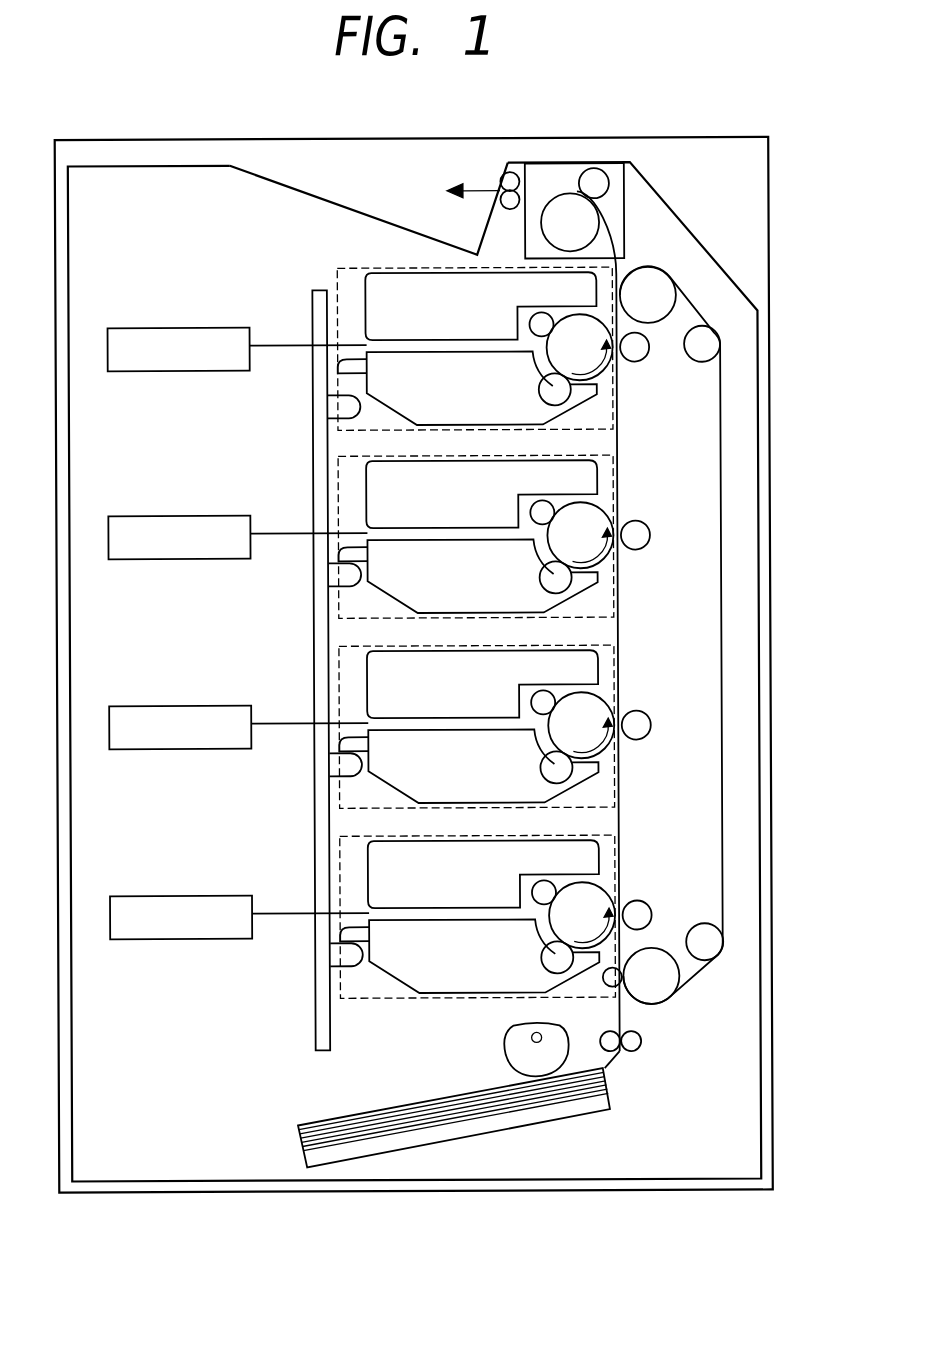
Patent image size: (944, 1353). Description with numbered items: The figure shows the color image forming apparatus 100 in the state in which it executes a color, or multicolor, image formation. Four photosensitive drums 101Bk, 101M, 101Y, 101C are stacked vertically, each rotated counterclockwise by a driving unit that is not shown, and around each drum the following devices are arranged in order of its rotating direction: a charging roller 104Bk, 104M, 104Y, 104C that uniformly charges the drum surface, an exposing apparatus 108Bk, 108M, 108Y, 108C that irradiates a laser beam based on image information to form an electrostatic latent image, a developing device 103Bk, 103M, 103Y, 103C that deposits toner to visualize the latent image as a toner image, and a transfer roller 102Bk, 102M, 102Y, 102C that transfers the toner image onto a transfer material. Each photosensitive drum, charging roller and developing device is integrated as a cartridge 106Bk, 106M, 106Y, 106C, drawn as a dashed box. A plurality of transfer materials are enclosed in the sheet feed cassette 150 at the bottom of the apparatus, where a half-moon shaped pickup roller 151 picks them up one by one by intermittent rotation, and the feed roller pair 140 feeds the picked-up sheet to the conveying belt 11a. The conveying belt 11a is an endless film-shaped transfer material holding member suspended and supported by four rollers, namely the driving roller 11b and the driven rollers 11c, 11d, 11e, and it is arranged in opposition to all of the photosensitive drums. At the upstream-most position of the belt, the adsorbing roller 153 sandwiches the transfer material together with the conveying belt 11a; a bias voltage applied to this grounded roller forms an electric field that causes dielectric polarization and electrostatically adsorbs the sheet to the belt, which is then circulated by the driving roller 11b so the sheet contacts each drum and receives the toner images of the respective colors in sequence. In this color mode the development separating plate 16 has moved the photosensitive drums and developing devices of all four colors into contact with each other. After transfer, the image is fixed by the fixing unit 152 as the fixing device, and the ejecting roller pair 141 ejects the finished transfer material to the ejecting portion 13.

The image forming apparatus 100 is at (151, 139).
The ejecting portion 13 is at (375, 216).
The ejecting roller pair 141 is at (509, 172).
The fixing unit 152 is at (627, 192).
The conveying belt 11a is at (723, 753).
The driving roller 11b is at (661, 276).
The driven roller 11c is at (716, 342).
The driven roller 11d is at (721, 942).
The driven roller 11e is at (668, 989).
The adsorbing roller 153 is at (614, 992).
The feed roller pair 140 is at (631, 1050).
The pickup roller 151 is at (505, 1054).
The sheet feed cassette 150 is at (300, 1143).
The development separating plate 16 is at (314, 1031).
The cartridge 106Bk is at (339, 275).
The cartridge 106M is at (339, 483).
The cartridge 106Y is at (340, 673).
The cartridge 106C is at (339, 862).
The photosensitive drum 101Bk is at (582, 305).
The photosensitive drum 101M is at (582, 493).
The photosensitive drum 101Y is at (582, 683).
The photosensitive drum 101C is at (582, 873).
The charging roller 104Bk is at (531, 323).
The charging roller 104M is at (531, 511).
The charging roller 104Y is at (531, 701).
The charging roller 104C is at (531, 891).
The developing device 103Bk is at (540, 389).
The developing device 103M is at (540, 577).
The developing device 103Y is at (540, 767).
The developing device 103C is at (540, 959).
The transfer roller 102Bk is at (637, 363).
The transfer roller 102M is at (637, 551).
The transfer roller 102Y is at (637, 741).
The transfer roller 102C is at (641, 902).
The exposing apparatus 108Bk is at (150, 327).
The exposing apparatus 108M is at (143, 515).
The exposing apparatus 108Y is at (158, 705).
The exposing apparatus 108C is at (148, 895).